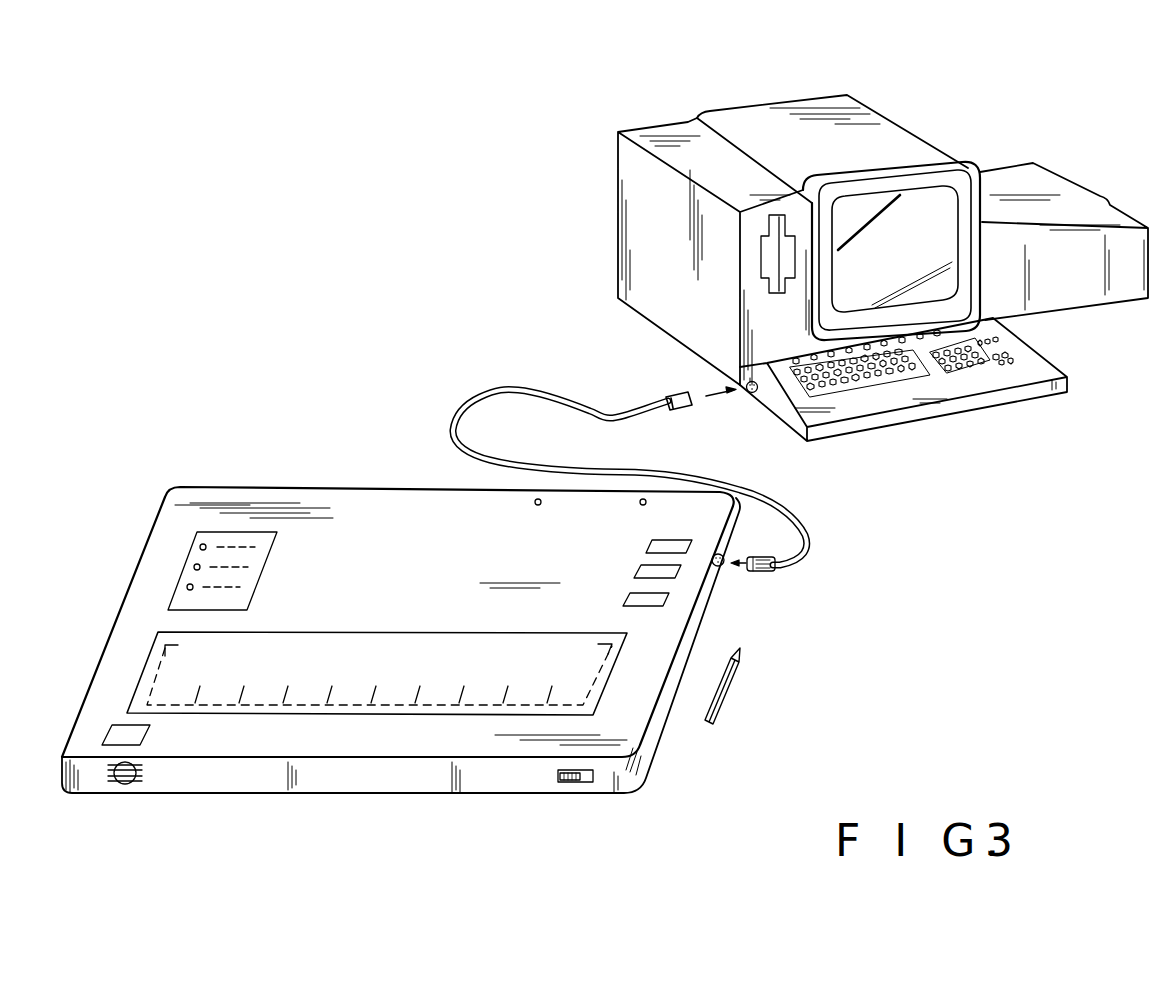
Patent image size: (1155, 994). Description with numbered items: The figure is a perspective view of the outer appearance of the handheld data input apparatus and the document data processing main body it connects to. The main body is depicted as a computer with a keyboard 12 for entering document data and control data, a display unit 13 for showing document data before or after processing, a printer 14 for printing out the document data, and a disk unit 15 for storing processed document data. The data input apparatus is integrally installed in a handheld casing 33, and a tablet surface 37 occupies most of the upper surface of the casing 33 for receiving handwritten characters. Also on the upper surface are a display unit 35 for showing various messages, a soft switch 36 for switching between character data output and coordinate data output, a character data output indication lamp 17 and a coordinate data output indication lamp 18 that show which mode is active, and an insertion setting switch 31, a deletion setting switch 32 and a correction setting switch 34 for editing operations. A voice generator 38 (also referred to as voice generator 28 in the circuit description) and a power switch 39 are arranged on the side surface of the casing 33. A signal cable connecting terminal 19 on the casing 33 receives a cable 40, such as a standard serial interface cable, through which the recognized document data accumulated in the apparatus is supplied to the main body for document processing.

The keyboard 12 is at (900, 380).
The display unit 13 is at (947, 207).
The printer 14 is at (1018, 178).
The disk unit 15 is at (667, 131).
The character data output indication lamp 17 is at (538, 499).
The coordinate data output indication lamp 18 is at (643, 499).
The signal cable connecting terminal 19 is at (720, 567).
The voice generator 28 is at (125, 785).
The insertion setting switch 31 is at (645, 547).
The deletion setting switch 32 is at (636, 570).
The casing 33 is at (258, 486).
The correction setting switch 34 is at (623, 598).
The display unit 35 is at (250, 573).
The soft switch 36 is at (112, 724).
The tablet surface 37 is at (494, 647).
The voice generator 38 is at (718, 710).
The power switch 39 is at (581, 784).
The cable 40 is at (520, 388).